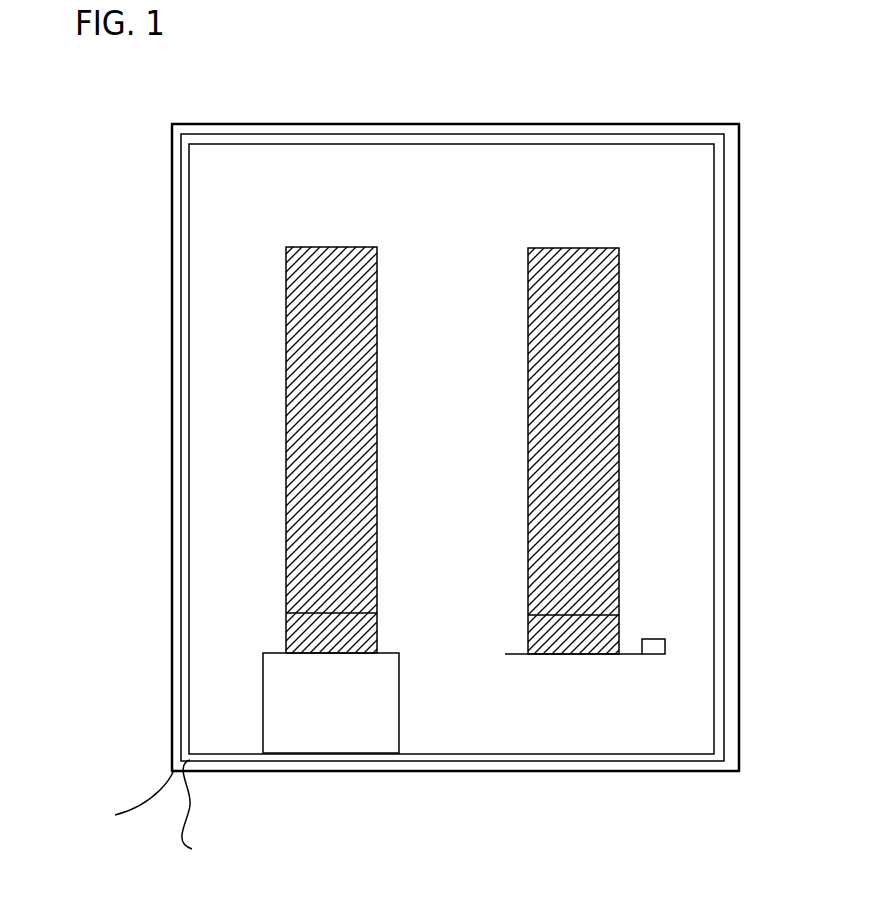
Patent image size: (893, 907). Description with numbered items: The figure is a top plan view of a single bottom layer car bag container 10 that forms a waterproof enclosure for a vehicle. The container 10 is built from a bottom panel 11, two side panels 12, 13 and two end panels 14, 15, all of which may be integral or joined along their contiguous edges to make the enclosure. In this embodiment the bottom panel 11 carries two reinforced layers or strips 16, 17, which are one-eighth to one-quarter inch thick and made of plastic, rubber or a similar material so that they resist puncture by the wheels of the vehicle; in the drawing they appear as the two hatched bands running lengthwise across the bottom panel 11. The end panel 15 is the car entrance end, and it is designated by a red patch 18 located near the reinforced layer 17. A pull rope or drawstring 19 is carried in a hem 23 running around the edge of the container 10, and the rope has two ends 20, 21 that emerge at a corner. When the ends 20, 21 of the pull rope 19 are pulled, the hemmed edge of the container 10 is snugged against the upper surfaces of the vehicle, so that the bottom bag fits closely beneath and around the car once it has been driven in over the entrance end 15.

The car bag container 10 is at (121, 249).
The bottom panel 11 is at (468, 426).
The side panel 12 is at (172, 412).
The side panel 13 is at (739, 245).
The end panel 14 is at (519, 127).
The end panel 15 is at (414, 772).
The reinforced strip 16 is at (378, 330).
The reinforced strip 17 is at (527, 375).
The red patch 18 is at (655, 654).
The pull rope 19 is at (436, 133).
The pull rope end 20 is at (726, 170).
The pull rope end 21 is at (190, 815).
The hem 23 is at (172, 222).